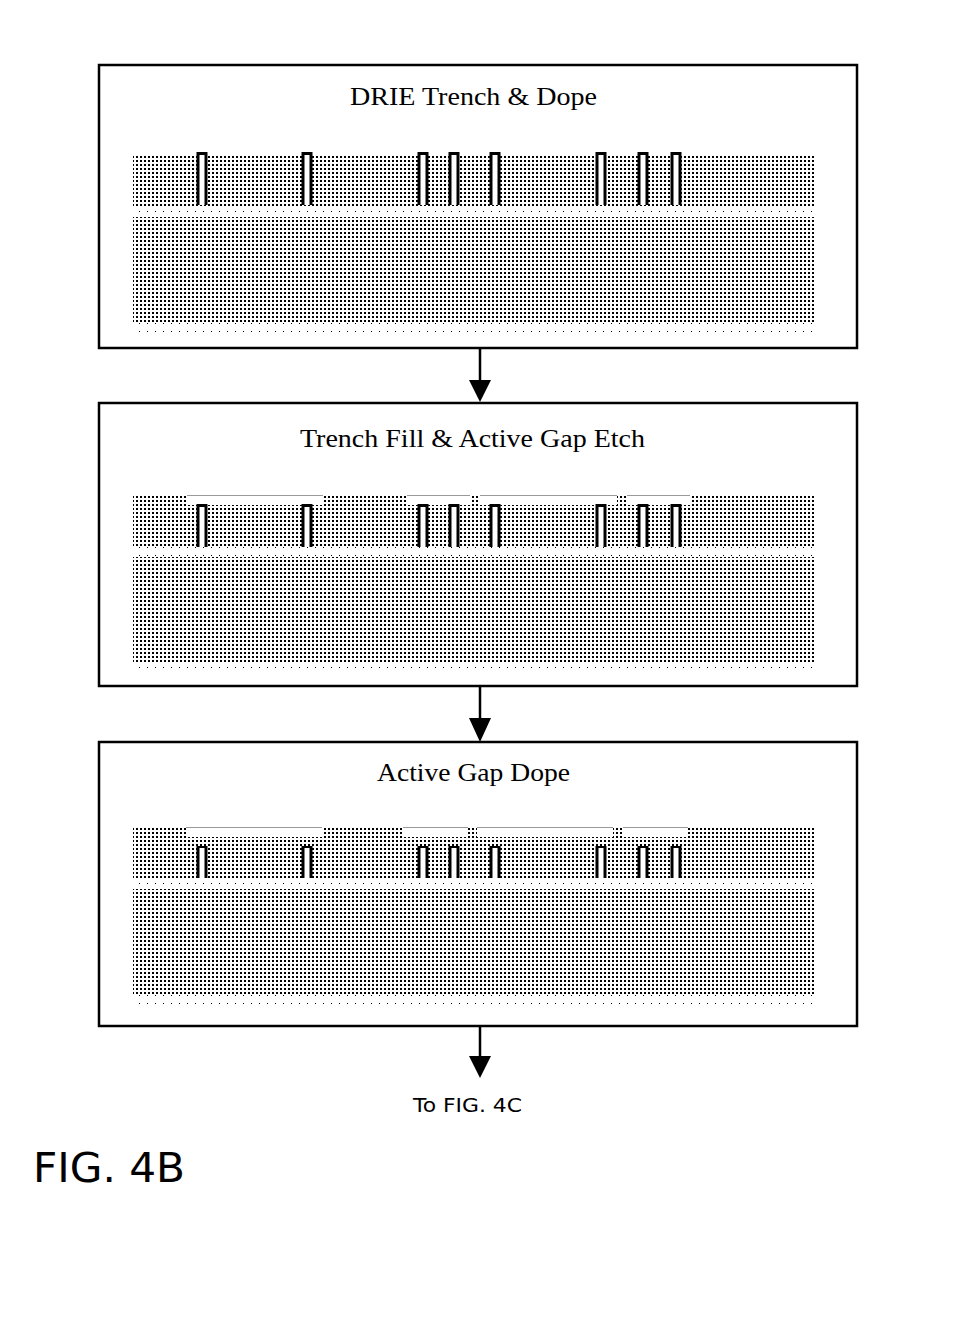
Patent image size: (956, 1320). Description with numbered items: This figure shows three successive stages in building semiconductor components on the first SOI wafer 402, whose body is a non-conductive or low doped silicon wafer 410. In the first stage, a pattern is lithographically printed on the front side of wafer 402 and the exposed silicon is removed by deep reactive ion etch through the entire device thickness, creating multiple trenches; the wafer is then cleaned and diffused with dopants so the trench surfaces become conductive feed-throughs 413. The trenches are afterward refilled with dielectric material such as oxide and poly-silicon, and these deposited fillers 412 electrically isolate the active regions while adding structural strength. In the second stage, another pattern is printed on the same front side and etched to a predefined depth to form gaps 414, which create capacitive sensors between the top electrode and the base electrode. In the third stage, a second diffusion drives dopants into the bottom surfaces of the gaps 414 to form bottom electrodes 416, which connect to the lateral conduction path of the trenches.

The first SOI wafer 402 is at (98, 205).
The low doped silicon wafer 410 is at (484, 276).
The deposited fillers 412 is at (674, 153).
The feed-throughs 413 is at (306, 153).
The gaps 414 is at (525, 503).
The bottom electrodes 416 is at (580, 835).